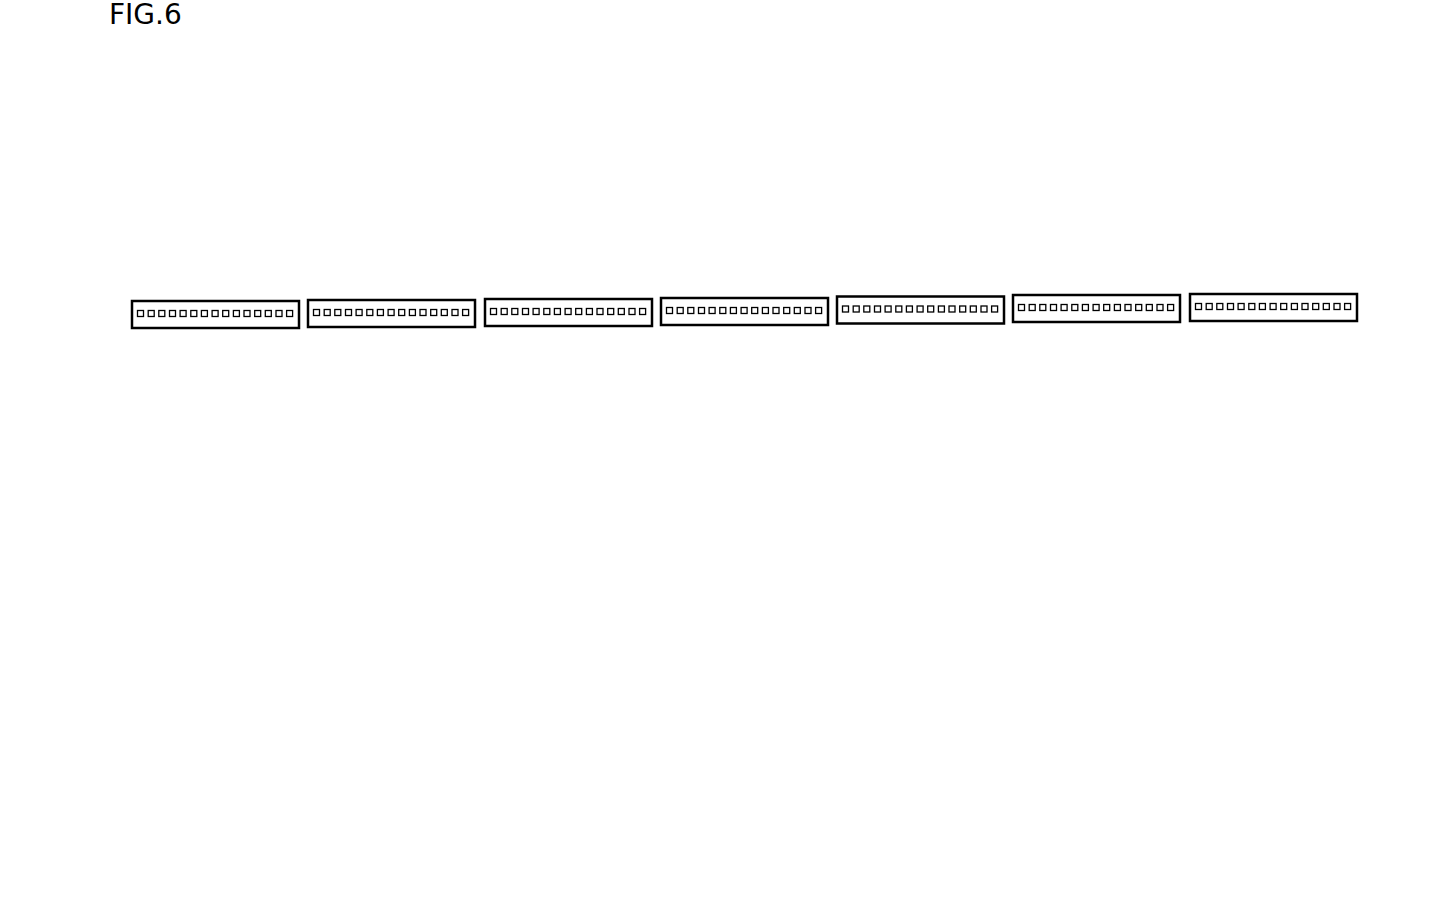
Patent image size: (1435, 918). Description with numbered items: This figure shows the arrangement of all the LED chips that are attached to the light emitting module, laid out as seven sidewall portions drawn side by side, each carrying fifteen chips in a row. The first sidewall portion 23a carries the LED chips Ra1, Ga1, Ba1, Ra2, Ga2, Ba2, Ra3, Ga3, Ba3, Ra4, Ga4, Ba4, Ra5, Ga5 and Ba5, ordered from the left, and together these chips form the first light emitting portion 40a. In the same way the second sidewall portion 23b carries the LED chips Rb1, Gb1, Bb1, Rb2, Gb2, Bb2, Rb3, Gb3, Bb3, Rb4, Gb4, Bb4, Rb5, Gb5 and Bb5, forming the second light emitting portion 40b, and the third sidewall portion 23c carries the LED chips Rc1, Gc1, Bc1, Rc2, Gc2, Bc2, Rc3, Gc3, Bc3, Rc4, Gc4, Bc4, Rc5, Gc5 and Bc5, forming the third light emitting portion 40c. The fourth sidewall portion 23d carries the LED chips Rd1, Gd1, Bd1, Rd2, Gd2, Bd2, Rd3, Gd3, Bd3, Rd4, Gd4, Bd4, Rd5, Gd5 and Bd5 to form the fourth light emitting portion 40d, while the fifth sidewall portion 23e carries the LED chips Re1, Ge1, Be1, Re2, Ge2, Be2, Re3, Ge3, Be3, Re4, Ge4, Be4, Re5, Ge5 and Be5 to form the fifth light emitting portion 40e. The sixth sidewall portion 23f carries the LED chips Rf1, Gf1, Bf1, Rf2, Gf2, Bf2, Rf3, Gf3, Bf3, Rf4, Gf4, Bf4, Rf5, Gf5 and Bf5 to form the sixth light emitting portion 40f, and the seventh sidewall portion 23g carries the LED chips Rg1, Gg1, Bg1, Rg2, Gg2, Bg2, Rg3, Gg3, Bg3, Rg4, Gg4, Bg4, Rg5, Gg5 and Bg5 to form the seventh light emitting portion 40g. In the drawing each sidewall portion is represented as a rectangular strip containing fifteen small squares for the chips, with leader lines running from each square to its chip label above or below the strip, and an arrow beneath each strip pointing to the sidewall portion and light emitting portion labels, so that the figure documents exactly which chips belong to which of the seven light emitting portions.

The first sidewall portion 23a is at (234, 421).
The first light emitting portion 40a is at (154, 348).
The second sidewall portion 23b is at (410, 420).
The second light emitting portion 40b is at (391, 313).
The third sidewall portion 23c is at (586, 419).
The third light emitting portion 40c is at (568, 312).
The fourth sidewall portion 23d is at (763, 418).
The fourth light emitting portion 40d is at (744, 311).
The fifth sidewall portion 23e is at (939, 417).
The fifth light emitting portion 40e is at (920, 310).
The sixth sidewall portion 23f is at (1112, 415).
The sixth light emitting portion 40f is at (1096, 308).
The seventh sidewall portion 23g is at (1292, 414).
The seventh light emitting portion 40g is at (1273, 307).
The LED chip Ra1 is at (123, 230).
The LED chip Ga1 is at (142, 251).
The LED chip Ba1 is at (162, 272).
The LED chip Ra2 is at (173, 353).
The LED chip Ga2 is at (186, 377).
The LED chip Ba2 is at (209, 397).
The LED chip Ra3 is at (187, 230).
The LED chip Ga3 is at (209, 251).
The LED chip Ba3 is at (228, 272).
The LED chip Ra4 is at (237, 353).
The LED chip Ga4 is at (251, 377).
The LED chip Ba4 is at (273, 397).
The LED chip Ra5 is at (251, 230).
The LED chip Ga5 is at (273, 251).
The LED chip Ba5 is at (288, 272).
The LED chip Rb1 is at (299, 229).
The LED chip Gb1 is at (319, 250).
The LED chip Bb1 is at (338, 271).
The LED chip Rb2 is at (349, 352).
The LED chip Gb2 is at (363, 376).
The LED chip Bb2 is at (386, 396).
The LED chip Rb3 is at (363, 229).
The LED chip Gb3 is at (386, 250).
The LED chip Bb3 is at (404, 271).
The LED chip Rb4 is at (413, 352).
The LED chip Gb4 is at (428, 376).
The LED chip Bb4 is at (449, 396).
The LED chip Rb5 is at (427, 229).
The LED chip Gb5 is at (450, 250).
The LED chip Bb5 is at (464, 271).
The LED chip Rc1 is at (476, 228).
The LED chip Gc1 is at (495, 249).
The LED chip Bc1 is at (514, 270).
The LED chip Rc2 is at (525, 351).
The LED chip Gc2 is at (539, 375).
The LED chip Bc2 is at (562, 395).
The LED chip Rc3 is at (540, 228).
The LED chip Gc3 is at (562, 249).
The LED chip Bc3 is at (580, 270).
The LED chip Rc4 is at (589, 351).
The LED chip Gc4 is at (604, 375).
The LED chip Bc4 is at (625, 395).
The LED chip Rc5 is at (604, 228).
The LED chip Gc5 is at (626, 249).
The LED chip Bc5 is at (640, 270).
The LED chip Rd1 is at (652, 227).
The LED chip Gd1 is at (672, 248).
The LED chip Bd1 is at (691, 269).
The LED chip Rd2 is at (702, 350).
The LED chip Gd2 is at (716, 374).
The LED chip Bd2 is at (739, 394).
The LED chip Rd3 is at (716, 227).
The LED chip Gd3 is at (739, 248).
The LED chip Bd3 is at (757, 269).
The LED chip Rd4 is at (766, 350).
The LED chip Gd4 is at (781, 374).
The LED chip Bd4 is at (802, 394).
The LED chip Rd5 is at (780, 227).
The LED chip Gd5 is at (803, 248).
The LED chip Bd5 is at (817, 269).
The LED chip Re1 is at (828, 226).
The LED chip Ge1 is at (847, 247).
The LED chip Be1 is at (867, 268).
The LED chip Re2 is at (877, 348).
The LED chip Ge2 is at (891, 372).
The LED chip Be2 is at (914, 392).
The LED chip Re3 is at (892, 226).
The LED chip Ge3 is at (914, 247).
The LED chip Be3 is at (933, 268).
The LED chip Re4 is at (941, 348).
The LED chip Ge4 is at (956, 372).
The LED chip Be4 is at (978, 392).
The LED chip Re5 is at (956, 226).
The LED chip Ge5 is at (978, 247).
The LED chip Be5 is at (993, 268).
The LED chip Rf1 is at (1004, 224).
The LED chip Gf1 is at (1021, 245).
The LED chip Bf1 is at (1041, 266).
The LED chip Rf2 is at (1052, 347).
The LED chip Gf2 is at (1065, 371).
The LED chip Bf2 is at (1088, 391).
The LED chip Rf3 is at (1068, 224).
The LED chip Gf3 is at (1088, 245).
The LED chip Bf3 is at (1107, 266).
The LED chip Rf4 is at (1116, 347).
The LED chip Gf4 is at (1130, 371).
The LED chip Bf4 is at (1152, 391).
The LED chip Rf5 is at (1132, 224).
The LED chip Gf5 is at (1152, 245).
The LED chip Bf5 is at (1167, 266).
The LED chip Rg1 is at (1181, 223).
The LED chip Gg1 is at (1201, 244).
The LED chip Bg1 is at (1220, 265).
The LED chip Rg2 is at (1231, 346).
The LED chip Gg2 is at (1245, 370).
The LED chip Bg2 is at (1268, 390).
The LED chip Rg3 is at (1245, 223).
The LED chip Gg3 is at (1268, 244).
The LED chip Bg3 is at (1286, 265).
The LED chip Rg4 is at (1295, 346).
The LED chip Gg4 is at (1310, 370).
The LED chip Bg4 is at (1331, 390).
The LED chip Rg5 is at (1309, 223).
The LED chip Gg5 is at (1332, 244).
The LED chip Bg5 is at (1346, 265).